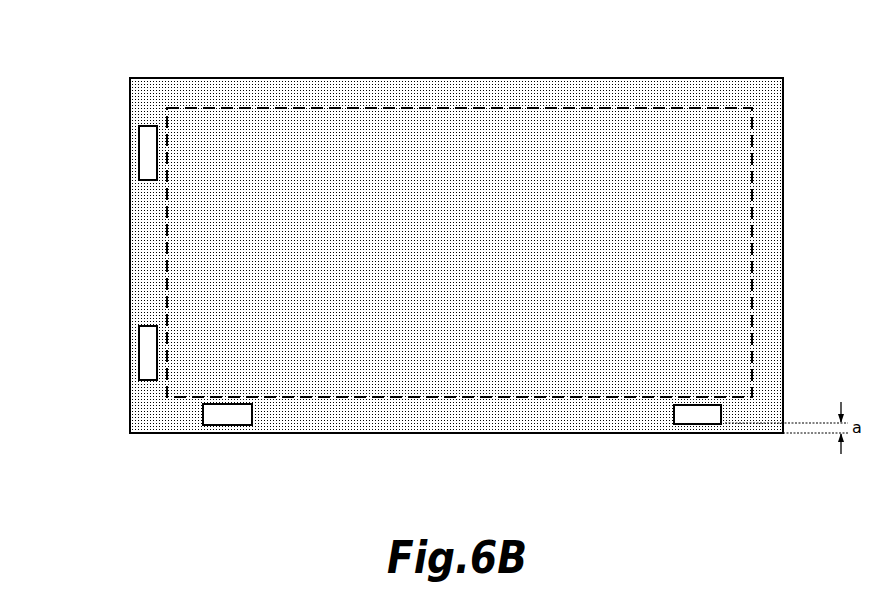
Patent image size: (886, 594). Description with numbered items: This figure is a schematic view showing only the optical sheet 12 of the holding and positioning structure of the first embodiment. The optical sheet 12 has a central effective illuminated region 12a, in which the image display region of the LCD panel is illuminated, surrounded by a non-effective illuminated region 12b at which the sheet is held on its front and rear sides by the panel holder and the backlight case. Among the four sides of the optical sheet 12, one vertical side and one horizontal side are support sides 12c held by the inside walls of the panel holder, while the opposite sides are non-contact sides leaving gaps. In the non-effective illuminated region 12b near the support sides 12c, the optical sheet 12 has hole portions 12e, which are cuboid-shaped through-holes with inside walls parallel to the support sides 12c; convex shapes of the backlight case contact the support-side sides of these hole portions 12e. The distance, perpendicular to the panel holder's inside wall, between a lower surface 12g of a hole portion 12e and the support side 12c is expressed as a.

The optical sheet 12 is at (783, 78).
The effective illuminated region 12a is at (357, 147).
The non-effective illuminated region 12b is at (485, 95).
The support side 12c is at (702, 424).
The hole portion 12e is at (149, 152).
The lower surface of the hole portion 12g is at (722, 424).